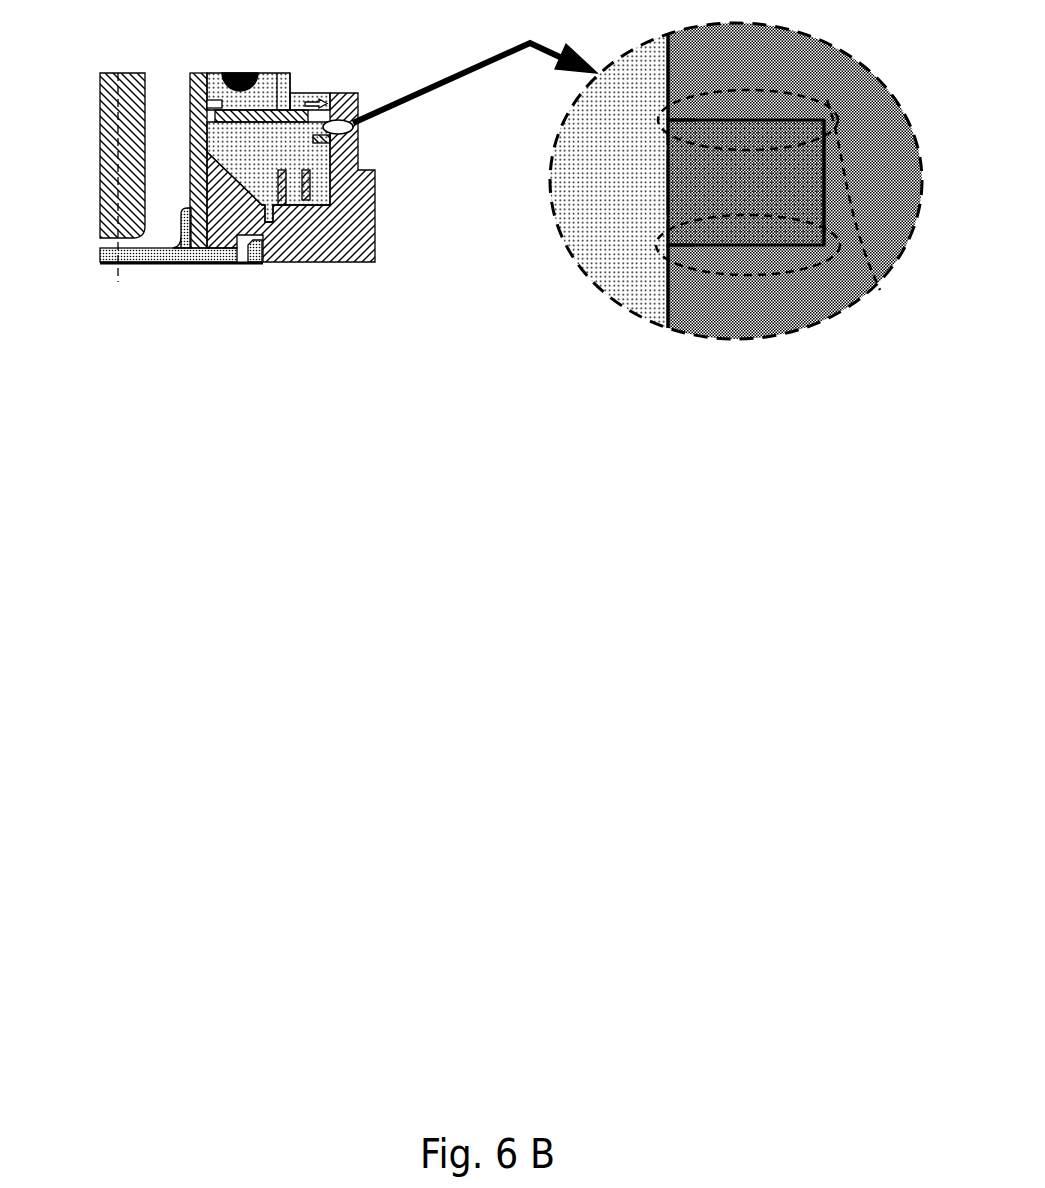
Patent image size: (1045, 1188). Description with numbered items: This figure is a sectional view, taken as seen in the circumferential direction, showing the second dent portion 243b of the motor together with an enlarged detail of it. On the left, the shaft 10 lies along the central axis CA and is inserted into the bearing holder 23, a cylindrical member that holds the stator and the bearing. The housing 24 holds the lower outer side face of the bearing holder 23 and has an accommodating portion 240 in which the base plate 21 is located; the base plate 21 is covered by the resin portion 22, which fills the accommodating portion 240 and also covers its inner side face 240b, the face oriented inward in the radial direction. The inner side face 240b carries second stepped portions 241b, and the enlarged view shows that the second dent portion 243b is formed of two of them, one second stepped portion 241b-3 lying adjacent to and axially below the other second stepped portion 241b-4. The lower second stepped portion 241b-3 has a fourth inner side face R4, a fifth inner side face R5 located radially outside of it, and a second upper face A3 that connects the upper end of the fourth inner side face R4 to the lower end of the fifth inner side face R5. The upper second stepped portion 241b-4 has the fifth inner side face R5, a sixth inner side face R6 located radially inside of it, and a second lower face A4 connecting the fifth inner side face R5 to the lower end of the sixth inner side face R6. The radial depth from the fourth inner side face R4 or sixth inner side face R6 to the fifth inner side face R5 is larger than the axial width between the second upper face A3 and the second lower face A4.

The shaft 10 is at (110, 88).
The base plate 21 is at (213, 112).
The resin portion 22 is at (637, 68).
The bearing holder 23 is at (198, 208).
The housing 24 is at (230, 222).
The accommodating portion 240 is at (333, 183).
The inner side face 240b is at (310, 103).
The second stepped portion 241b is at (307, 117).
The second stepped portion 241b-3 is at (765, 293).
The second stepped portion 241b-4 is at (878, 290).
The second dent portion 243b is at (678, 177).
The second upper face A3 is at (693, 240).
The second lower face A4 is at (688, 123).
The fourth inner side face R4 is at (666, 291).
The fifth inner side face R5 is at (824, 181).
The sixth inner side face R6 is at (665, 77).
The central axis CA is at (114, 275).